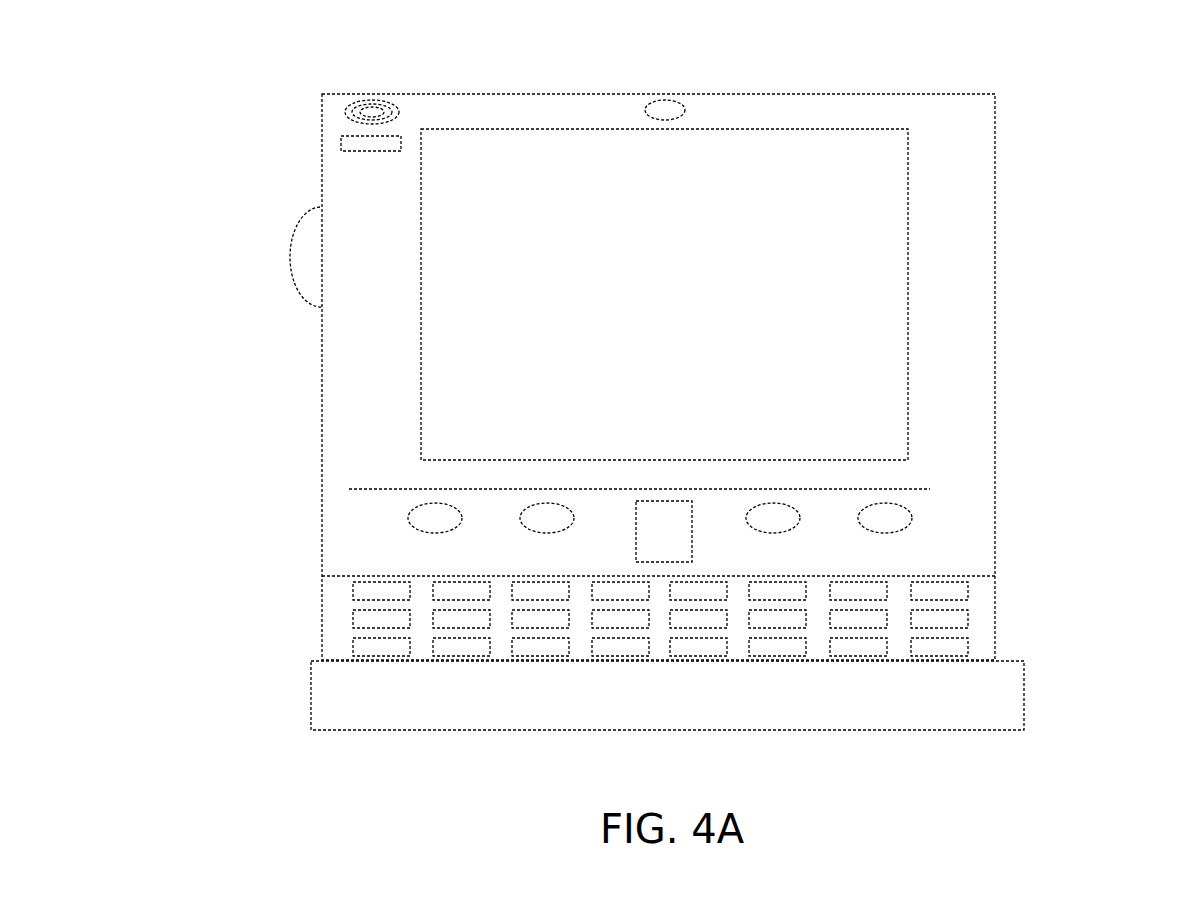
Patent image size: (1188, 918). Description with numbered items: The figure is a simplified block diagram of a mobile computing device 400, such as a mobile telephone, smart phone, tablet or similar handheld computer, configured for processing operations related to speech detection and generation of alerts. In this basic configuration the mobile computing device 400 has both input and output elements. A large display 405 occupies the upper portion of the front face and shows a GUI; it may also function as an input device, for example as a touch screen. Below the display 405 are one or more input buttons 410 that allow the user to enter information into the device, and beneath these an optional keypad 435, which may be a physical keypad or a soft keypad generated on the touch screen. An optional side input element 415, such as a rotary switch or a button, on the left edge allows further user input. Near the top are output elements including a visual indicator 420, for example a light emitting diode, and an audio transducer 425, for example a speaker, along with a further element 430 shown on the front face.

The mobile computing device 400 is at (980, 104).
The display 405 is at (570, 404).
The input buttons 410 is at (660, 540).
The side input element 415 is at (308, 256).
The visual indicator 420 is at (341, 147).
The audio transducer 425 is at (345, 112).
The sensor 430 is at (685, 110).
The keypad 435 is at (332, 650).